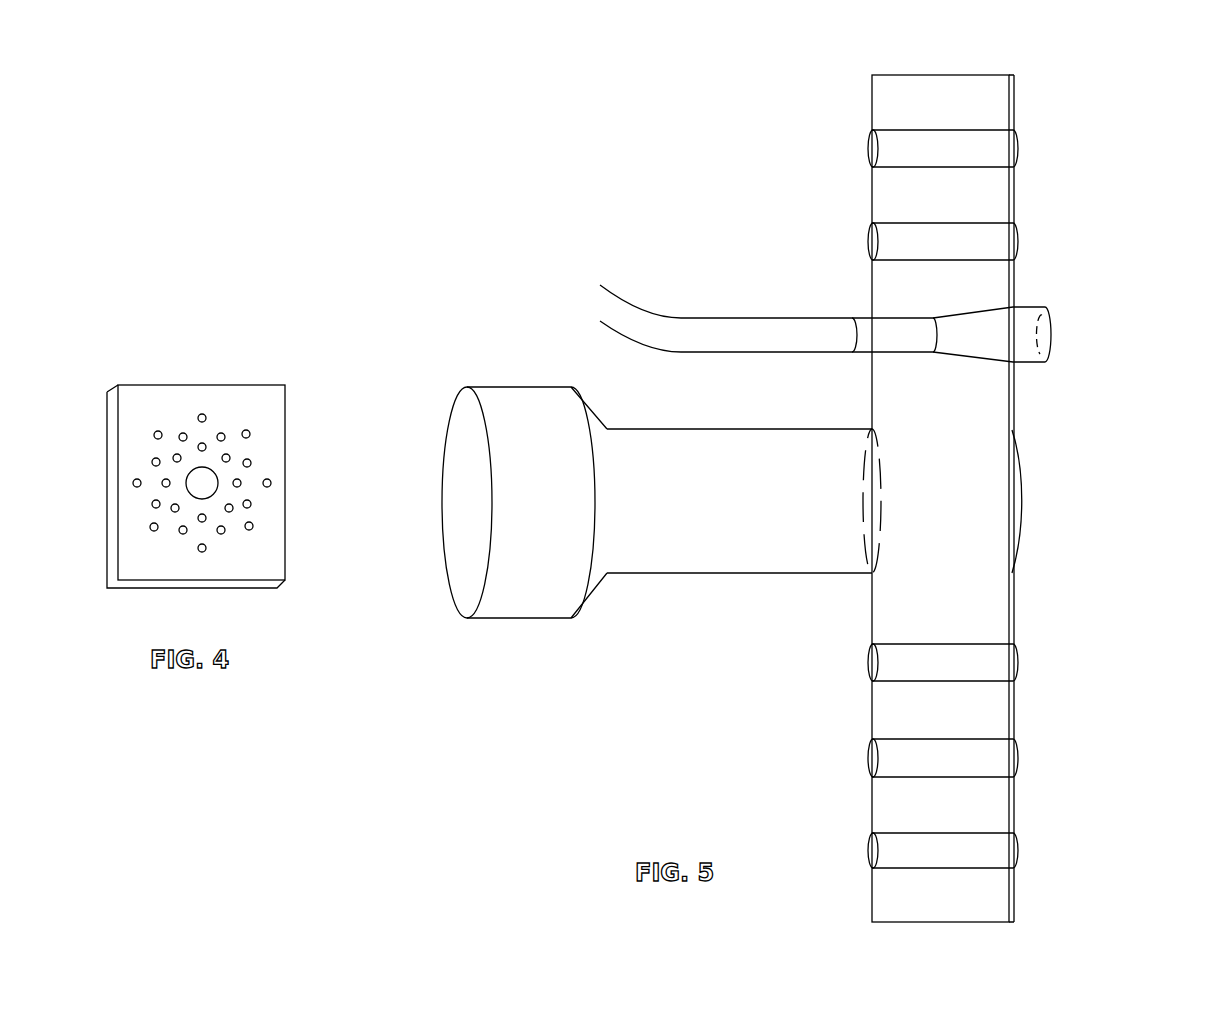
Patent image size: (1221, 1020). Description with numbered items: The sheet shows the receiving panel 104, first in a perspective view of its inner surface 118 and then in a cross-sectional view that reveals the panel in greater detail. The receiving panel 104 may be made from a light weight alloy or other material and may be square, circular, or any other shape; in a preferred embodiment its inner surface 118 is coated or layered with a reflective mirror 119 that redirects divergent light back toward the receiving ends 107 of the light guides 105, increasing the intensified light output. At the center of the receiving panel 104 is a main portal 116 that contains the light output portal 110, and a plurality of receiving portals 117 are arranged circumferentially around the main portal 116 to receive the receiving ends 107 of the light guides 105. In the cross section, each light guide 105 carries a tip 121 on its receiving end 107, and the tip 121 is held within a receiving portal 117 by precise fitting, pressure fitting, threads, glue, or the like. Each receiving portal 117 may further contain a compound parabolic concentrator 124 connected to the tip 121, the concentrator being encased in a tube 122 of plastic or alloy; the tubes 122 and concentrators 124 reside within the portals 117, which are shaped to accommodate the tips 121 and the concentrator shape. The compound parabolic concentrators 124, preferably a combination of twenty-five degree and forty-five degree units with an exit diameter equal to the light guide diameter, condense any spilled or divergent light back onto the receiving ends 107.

In FIG. 4, the receiving panel 104 is at (112, 510).
In FIG. 5, the receiving panel 104 is at (887, 107).
In FIG. 5, the light guide 105 is at (639, 308).
In FIG. 5, the receiving end 107 is at (761, 315).
In FIG. 5, the light output portal 110 is at (600, 600).
In FIG. 4, the main portal 116 is at (217, 477).
In FIG. 5, the main portal 116 is at (1013, 502).
In FIG. 4, the receiving portal 117 is at (246, 430).
In FIG. 5, the receiving portal 117 is at (1018, 138).
In FIG. 4, the inner surface 118 is at (132, 430).
In FIG. 5, the inner surface 118 is at (1017, 382).
In FIG. 5, the reflective mirror 119 is at (1015, 803).
In FIG. 5, the tip 121 is at (880, 318).
In FIG. 5, the tube 122 is at (915, 318).
In FIG. 5, the compound parabolic concentrator 124 is at (987, 350).